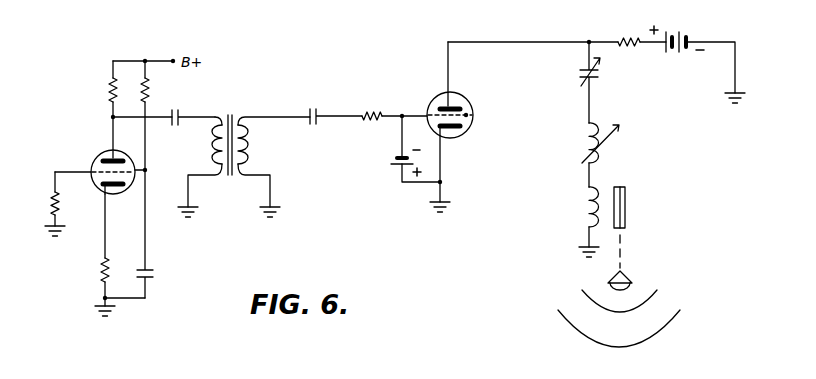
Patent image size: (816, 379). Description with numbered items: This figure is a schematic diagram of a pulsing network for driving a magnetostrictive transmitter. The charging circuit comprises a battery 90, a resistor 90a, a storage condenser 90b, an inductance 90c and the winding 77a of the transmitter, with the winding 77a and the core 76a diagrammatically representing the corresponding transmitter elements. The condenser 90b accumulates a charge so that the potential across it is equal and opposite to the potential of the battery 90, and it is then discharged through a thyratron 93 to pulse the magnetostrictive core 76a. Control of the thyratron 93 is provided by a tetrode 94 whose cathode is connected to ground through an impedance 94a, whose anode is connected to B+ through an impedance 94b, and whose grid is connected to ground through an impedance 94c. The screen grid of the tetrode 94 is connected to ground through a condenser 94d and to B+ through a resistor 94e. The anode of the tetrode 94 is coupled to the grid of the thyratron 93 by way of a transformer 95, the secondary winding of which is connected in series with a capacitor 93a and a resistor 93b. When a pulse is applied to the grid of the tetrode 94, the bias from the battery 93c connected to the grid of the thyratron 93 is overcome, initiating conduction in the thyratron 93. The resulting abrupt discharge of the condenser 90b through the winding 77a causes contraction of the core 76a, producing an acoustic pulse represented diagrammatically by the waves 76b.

The tetrode 94 is at (100, 158).
The impedance 94a is at (101, 273).
The impedance 94b is at (109, 91).
The impedance 94c is at (50, 206).
The condenser 94d is at (155, 274).
The resistor 94e is at (150, 91).
The transformer 95 is at (237, 113).
The thyratron 93 is at (457, 95).
The capacitor 93a is at (313, 109).
The resistor 93b is at (372, 111).
The battery 93c is at (390, 158).
The battery 90 is at (687, 31).
The resistor 90a is at (633, 36).
The storage condenser 90b is at (601, 74).
The inductance 90c is at (612, 146).
The winding 77a is at (588, 208).
The core 76a is at (627, 208).
The waves 76b is at (657, 299).